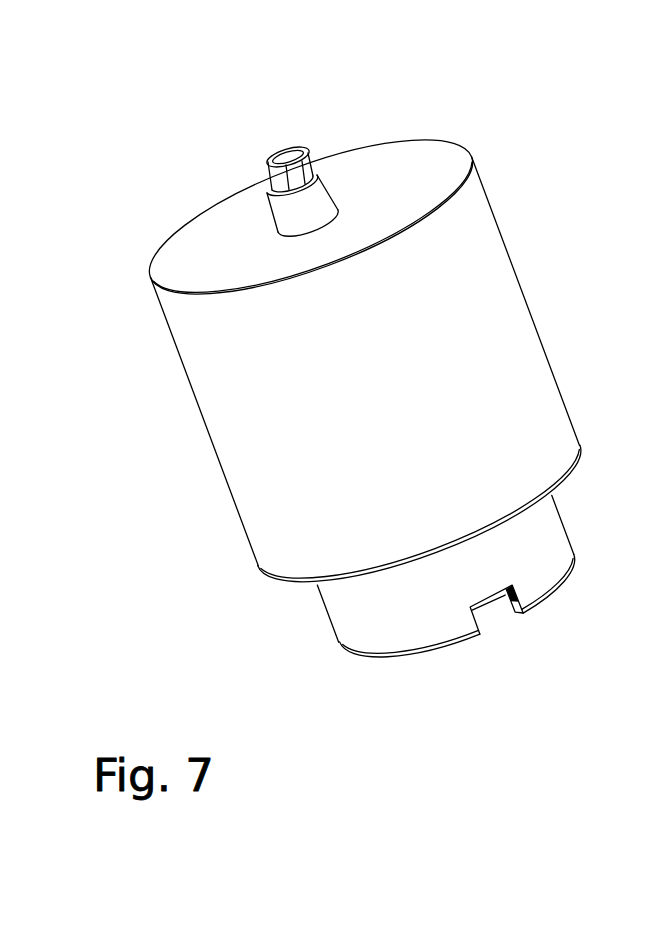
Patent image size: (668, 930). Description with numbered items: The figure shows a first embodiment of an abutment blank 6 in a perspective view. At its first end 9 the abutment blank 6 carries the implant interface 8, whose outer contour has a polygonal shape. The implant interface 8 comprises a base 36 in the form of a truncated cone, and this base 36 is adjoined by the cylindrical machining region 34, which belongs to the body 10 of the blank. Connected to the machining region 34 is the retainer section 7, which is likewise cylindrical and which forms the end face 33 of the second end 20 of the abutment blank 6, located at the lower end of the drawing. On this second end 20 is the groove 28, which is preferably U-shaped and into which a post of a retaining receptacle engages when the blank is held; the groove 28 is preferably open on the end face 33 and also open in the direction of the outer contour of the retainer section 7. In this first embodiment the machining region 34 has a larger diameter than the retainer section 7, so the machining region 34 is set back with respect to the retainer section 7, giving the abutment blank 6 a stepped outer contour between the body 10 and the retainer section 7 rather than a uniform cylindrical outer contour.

The abutment blank 6 is at (142, 228).
The retainer section 7 is at (535, 553).
The implant interface 8 is at (309, 150).
The first end 9 is at (210, 247).
The body 10 is at (478, 220).
The second end 20 is at (407, 660).
The groove 28 is at (512, 606).
The end face 33 is at (555, 587).
The machining region 34 is at (515, 303).
The base 36 is at (320, 203).